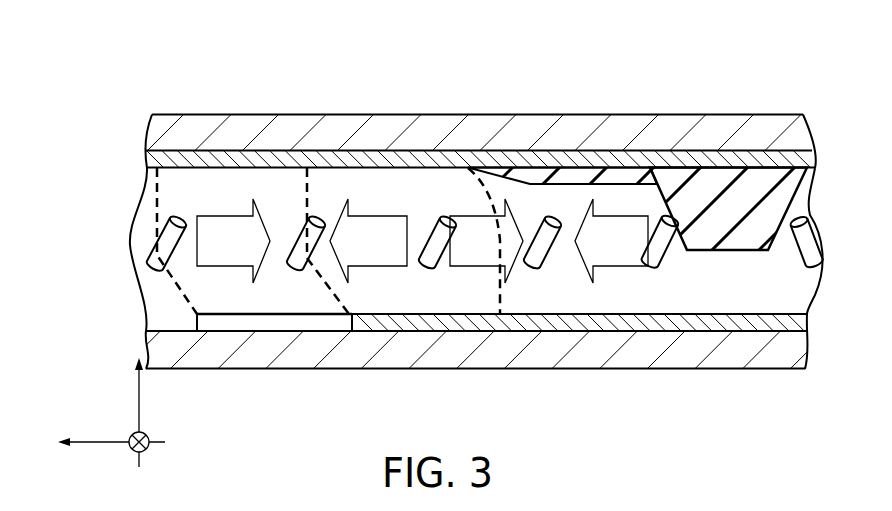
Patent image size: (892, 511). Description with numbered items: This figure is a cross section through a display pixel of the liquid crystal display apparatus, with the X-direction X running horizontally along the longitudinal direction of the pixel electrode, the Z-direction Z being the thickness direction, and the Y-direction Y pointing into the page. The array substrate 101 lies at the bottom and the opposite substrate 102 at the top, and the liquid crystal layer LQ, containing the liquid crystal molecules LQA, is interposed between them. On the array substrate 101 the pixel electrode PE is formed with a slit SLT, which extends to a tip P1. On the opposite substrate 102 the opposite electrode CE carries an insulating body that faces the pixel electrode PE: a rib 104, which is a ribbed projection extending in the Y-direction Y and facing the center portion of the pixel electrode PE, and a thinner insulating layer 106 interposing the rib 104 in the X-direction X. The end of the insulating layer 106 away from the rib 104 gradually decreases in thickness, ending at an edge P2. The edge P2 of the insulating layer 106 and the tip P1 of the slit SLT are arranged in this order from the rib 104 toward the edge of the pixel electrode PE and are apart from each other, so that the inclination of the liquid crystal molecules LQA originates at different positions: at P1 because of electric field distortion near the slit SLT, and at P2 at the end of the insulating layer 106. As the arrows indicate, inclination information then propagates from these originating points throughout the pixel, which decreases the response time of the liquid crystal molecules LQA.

The array substrate 101 is at (775, 375).
The opposite substrate 102 is at (785, 105).
The rib 104 is at (707, 177).
The insulating layer 106 is at (563, 177).
The opposite electrode CE is at (248, 157).
The pixel electrode PE is at (631, 333).
The slit SLT is at (267, 325).
The tip of the slit P1 is at (352, 330).
The edge of the insulating layer P2 is at (478, 150).
The liquid crystal layer LQ is at (173, 194).
The liquid crystal molecules LQA is at (152, 263).
The X-direction X is at (111, 429).
The Y-direction Y is at (148, 434).
The Z-direction Z is at (137, 401).